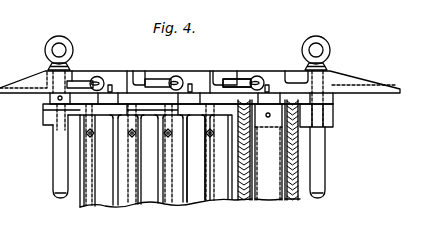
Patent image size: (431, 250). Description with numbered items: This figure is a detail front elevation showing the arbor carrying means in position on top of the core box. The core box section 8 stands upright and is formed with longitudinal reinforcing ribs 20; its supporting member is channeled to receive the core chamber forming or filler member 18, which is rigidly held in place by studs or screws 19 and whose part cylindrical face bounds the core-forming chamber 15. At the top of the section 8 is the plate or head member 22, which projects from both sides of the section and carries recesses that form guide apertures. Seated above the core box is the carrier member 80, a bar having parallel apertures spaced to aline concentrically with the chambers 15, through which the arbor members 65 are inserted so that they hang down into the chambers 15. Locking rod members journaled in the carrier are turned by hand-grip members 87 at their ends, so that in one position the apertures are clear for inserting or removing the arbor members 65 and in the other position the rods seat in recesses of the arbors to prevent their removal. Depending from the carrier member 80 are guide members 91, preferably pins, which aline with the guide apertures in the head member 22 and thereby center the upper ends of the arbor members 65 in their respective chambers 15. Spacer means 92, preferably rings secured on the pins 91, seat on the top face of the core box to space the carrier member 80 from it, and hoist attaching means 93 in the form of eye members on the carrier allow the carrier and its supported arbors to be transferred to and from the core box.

The core box section 8 is at (158, 204).
The core-forming chamber 15 is at (290, 200).
The core chamber forming or filler member 18 is at (245, 200).
The studs or screws 19 is at (88, 133).
The longitudinal reinforcing ribs 20 is at (187, 188).
The plate or head member 22 is at (143, 108).
The arbor member 65 is at (270, 173).
The carrier member 80 is at (190, 71).
The hand-grip member 87 is at (237, 80).
The guide member 91 is at (57, 175).
The spacer means 92 is at (205, 111).
The hoist attaching means 93 is at (45, 48).